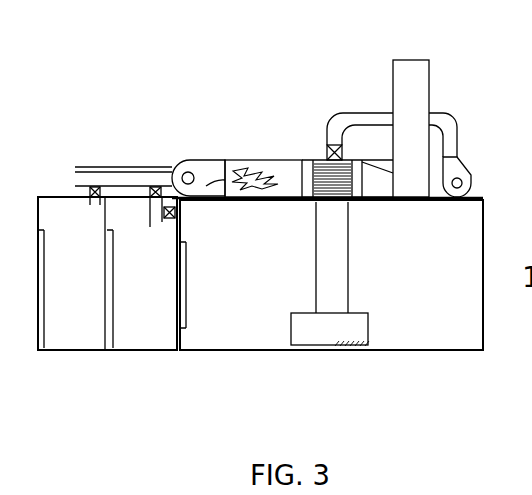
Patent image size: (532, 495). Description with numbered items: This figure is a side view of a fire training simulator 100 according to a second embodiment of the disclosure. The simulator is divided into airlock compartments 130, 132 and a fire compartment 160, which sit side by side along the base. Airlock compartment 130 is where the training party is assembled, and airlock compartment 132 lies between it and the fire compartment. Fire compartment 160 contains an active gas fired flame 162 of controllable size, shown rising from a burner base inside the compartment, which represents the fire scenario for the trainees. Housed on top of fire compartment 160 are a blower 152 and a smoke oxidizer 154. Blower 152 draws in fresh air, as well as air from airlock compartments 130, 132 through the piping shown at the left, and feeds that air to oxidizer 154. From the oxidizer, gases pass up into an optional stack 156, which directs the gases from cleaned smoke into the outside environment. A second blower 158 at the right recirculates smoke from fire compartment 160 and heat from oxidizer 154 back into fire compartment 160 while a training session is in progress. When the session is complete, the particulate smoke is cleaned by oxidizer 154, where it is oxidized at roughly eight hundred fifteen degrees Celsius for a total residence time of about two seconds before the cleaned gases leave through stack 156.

The heating system 100 is at (169, 99).
The airlock compartment 130 is at (68, 304).
The airlock compartment 132 is at (150, 323).
The blower 152 is at (196, 157).
The smoke oxidizer 154 is at (262, 166).
The stack 156 is at (396, 72).
The second blower 158 is at (465, 170).
The fire compartment 160 is at (445, 314).
The active gas fired flame 162 is at (339, 326).